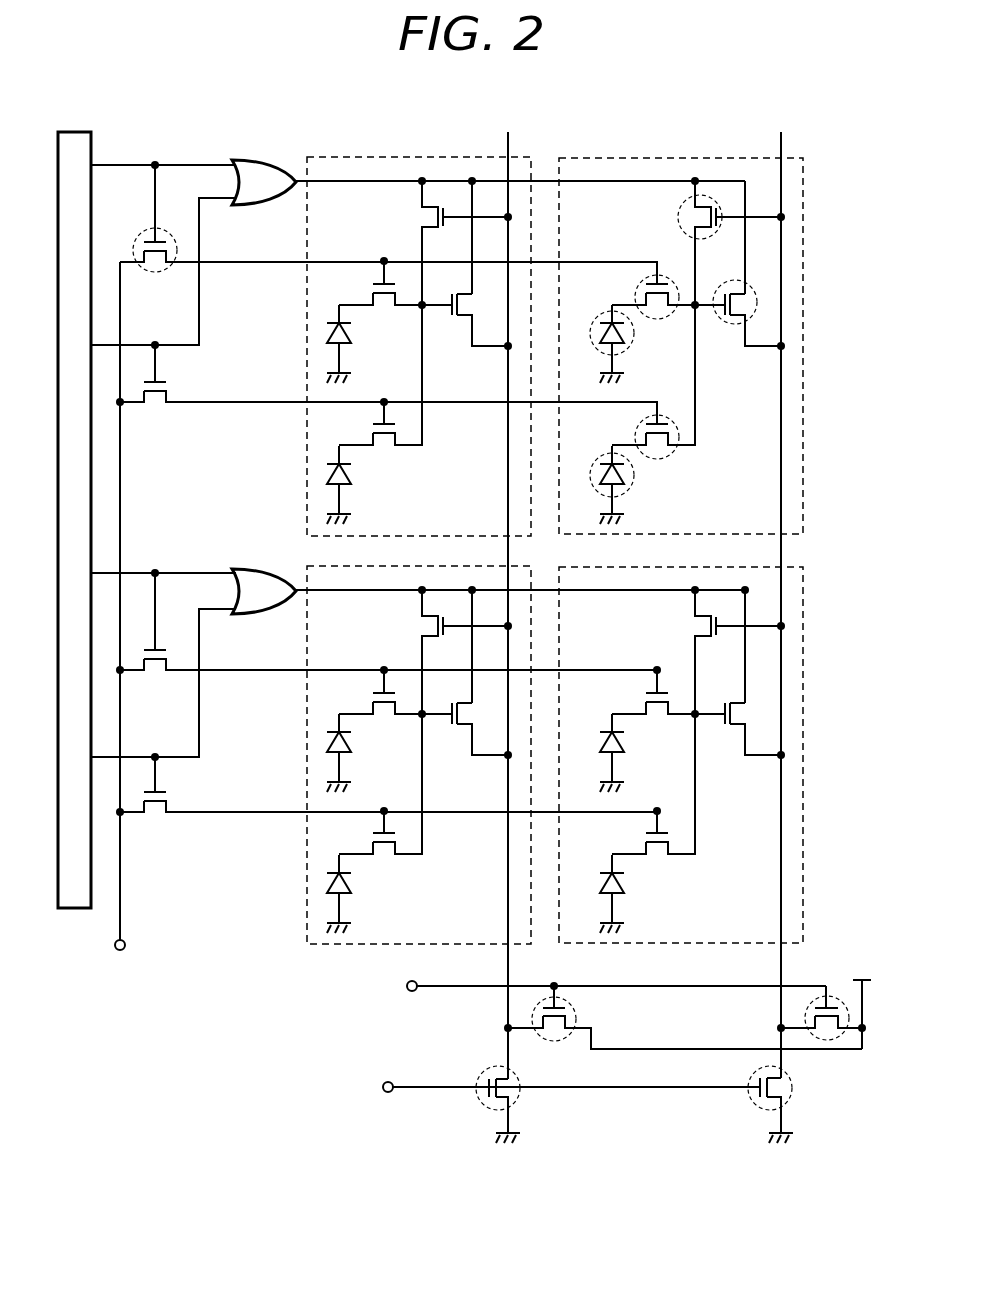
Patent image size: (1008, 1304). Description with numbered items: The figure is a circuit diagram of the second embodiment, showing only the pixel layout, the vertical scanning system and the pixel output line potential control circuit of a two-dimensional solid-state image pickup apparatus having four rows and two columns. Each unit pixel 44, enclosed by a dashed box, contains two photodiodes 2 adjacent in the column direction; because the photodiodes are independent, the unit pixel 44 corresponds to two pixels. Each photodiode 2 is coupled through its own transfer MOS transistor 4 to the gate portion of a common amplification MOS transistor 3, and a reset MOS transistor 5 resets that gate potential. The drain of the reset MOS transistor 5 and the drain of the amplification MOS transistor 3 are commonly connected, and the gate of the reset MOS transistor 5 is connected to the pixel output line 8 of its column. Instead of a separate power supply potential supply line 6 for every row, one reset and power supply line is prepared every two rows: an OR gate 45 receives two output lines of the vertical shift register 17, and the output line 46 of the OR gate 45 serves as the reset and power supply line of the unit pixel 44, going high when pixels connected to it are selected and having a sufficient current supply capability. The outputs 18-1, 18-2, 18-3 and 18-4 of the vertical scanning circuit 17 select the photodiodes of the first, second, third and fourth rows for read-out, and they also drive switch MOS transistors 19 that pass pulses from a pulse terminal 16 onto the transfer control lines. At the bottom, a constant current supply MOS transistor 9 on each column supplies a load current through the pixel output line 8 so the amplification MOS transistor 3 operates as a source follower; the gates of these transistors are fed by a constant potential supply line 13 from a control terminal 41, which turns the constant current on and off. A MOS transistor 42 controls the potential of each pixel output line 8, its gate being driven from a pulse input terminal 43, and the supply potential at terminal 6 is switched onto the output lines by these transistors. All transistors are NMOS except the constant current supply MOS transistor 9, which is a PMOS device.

The photodiode 2 is at (626, 334).
The amplification MOS transistor 3 is at (732, 323).
The transfer MOS transistor 4 is at (635, 296).
The reset MOS transistor 5 is at (690, 217).
The power supply potential supply line 6 is at (870, 978).
The pixel output line 8 is at (784, 550).
The constant current supply MOS transistor 9 is at (516, 1093).
The constant potential supply line 13 is at (640, 1089).
The pulse terminal 16 is at (123, 952).
The vertical scanning circuit 17 is at (76, 131).
The first row selection output line 18-1 is at (124, 163).
The second row selection output line 18-2 is at (202, 310).
The third row selection output line 18-3 is at (126, 571).
The fourth row selection output line 18-4 is at (202, 725).
The switch MOS transistor 19 is at (157, 263).
The control terminal 41 is at (385, 1093).
The MOS transistor 42 is at (577, 1020).
The pulse input terminal 43 is at (410, 992).
The unit pixel 44 is at (804, 190).
The OR gate 45 is at (257, 158).
The output line of the OR gate 46 is at (547, 178).